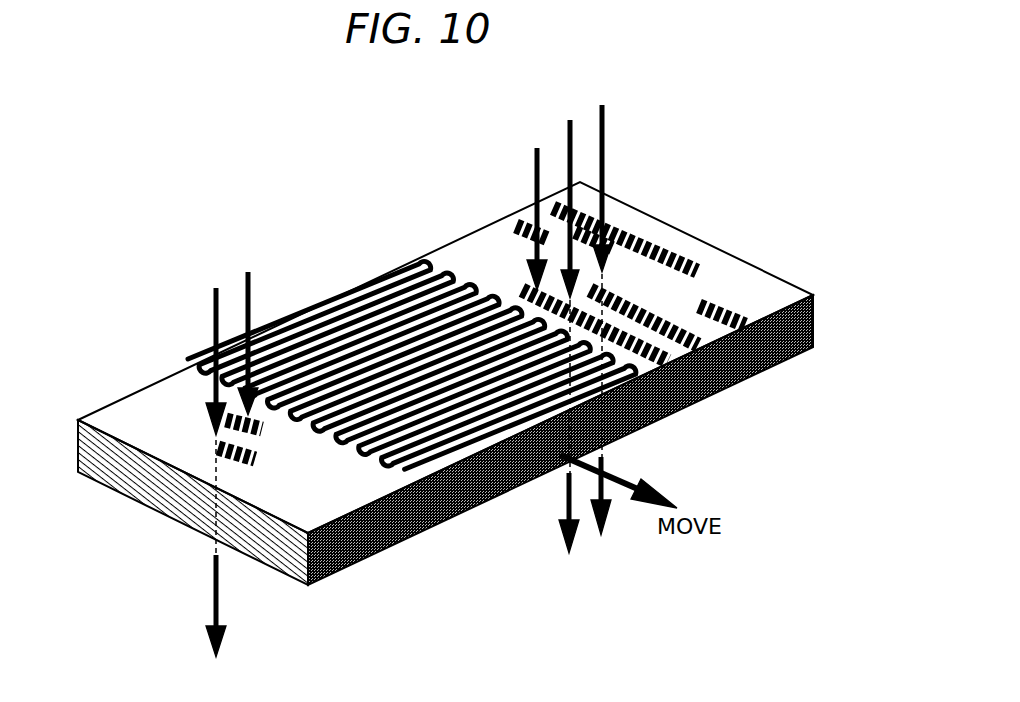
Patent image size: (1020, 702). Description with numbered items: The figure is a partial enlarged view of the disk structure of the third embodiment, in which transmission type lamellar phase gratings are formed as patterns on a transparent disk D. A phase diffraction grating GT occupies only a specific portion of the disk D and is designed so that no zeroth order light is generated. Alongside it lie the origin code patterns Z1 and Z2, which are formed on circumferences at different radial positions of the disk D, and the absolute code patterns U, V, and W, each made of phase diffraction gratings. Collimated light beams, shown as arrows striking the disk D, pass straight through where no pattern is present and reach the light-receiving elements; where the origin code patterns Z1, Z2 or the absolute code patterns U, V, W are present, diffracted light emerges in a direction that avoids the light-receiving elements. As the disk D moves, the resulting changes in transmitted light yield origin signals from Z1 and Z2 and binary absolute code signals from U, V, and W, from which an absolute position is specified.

The disk D is at (718, 380).
The phase diffraction grating GT is at (376, 350).
The origin code pattern Z1 is at (240, 412).
The origin code pattern Z2 is at (213, 452).
The absolute code pattern U is at (510, 287).
The absolute code pattern V is at (521, 223).
The absolute code pattern W is at (553, 202).